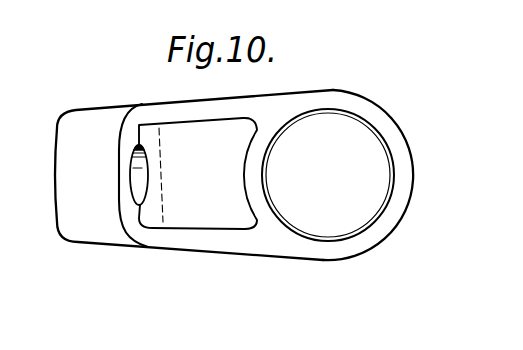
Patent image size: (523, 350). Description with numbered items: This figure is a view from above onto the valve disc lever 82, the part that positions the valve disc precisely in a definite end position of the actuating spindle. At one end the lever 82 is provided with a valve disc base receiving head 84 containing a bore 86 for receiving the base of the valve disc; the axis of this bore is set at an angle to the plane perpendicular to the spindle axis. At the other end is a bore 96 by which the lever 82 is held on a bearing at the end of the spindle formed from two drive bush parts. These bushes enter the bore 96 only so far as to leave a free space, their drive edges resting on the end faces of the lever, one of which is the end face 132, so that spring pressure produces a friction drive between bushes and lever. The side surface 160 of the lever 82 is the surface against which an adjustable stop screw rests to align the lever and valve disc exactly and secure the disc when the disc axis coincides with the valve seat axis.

The valve disc lever 82 is at (240, 179).
The valve disc base receiving head 84 is at (92, 207).
The bore 86 is at (147, 177).
The bore 96 is at (308, 122).
The end face 132 is at (385, 222).
The side surface 160 is at (133, 247).